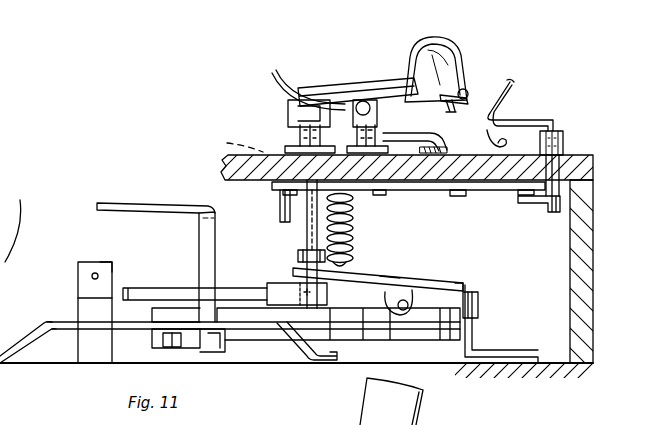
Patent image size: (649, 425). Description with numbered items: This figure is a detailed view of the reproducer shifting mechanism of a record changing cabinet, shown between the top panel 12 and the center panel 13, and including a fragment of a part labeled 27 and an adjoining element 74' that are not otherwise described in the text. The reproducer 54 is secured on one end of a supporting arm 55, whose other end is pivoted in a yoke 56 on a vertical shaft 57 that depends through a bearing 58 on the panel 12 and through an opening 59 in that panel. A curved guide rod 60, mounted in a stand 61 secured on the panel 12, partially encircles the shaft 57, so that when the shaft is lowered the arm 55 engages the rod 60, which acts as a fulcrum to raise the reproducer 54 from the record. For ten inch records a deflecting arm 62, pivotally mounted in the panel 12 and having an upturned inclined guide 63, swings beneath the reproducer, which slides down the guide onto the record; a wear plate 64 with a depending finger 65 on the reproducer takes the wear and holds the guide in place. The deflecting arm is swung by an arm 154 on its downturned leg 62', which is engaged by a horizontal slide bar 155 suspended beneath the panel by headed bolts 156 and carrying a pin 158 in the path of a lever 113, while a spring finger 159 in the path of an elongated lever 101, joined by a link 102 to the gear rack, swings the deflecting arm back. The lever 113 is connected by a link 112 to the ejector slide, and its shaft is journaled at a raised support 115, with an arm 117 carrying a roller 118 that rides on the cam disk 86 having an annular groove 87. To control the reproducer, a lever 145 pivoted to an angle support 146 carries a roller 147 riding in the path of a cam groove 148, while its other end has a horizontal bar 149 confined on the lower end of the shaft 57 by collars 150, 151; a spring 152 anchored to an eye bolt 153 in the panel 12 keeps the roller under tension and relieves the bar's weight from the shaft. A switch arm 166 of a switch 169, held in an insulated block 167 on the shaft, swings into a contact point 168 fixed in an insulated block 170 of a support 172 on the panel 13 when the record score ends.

The top panel 12 is at (225, 164).
The center panel 13 is at (560, 370).
The cover portion 27 is at (10, 219).
The reproducer 54 is at (408, 50).
The supporting arm 55 is at (380, 83).
The yoke 56 is at (290, 108).
The vertical shaft 57 is at (305, 229).
The bearing 58 is at (300, 133).
The opening 59 is at (224, 142).
The curved guide rod 60 is at (278, 72).
The stand 61 is at (350, 105).
The deflecting arm 62 is at (566, 132).
The downturned leg 62' is at (586, 175).
The upturned inclined guide 63 is at (514, 94).
The wear plate 64 is at (464, 89).
The depending finger 65 is at (470, 96).
The drum segment 74' is at (414, 401).
The cam disk 86 is at (352, 335).
The annular groove 87 is at (392, 330).
The elongated lever 101 is at (453, 112).
The link 102 is at (402, 135).
The link 112 is at (126, 204).
The lever 113 is at (200, 250).
The raised support 115 is at (55, 355).
The arm 117 is at (213, 348).
The roller 118 is at (165, 338).
The lever 145 is at (478, 300).
The angle support 146 is at (473, 337).
The roller 147 is at (463, 287).
The cam groove 148 is at (412, 292).
The horizontal bar 149 is at (392, 275).
The collar 150 is at (297, 256).
The collar 151 is at (292, 272).
The spring 152 is at (356, 222).
The eye bolt 153 is at (362, 195).
The arm 154 is at (530, 212).
The horizontal slide bar 155 is at (432, 190).
The headed bolt 156 is at (476, 196).
The pin 158 is at (279, 201).
The spring finger 159 is at (495, 140).
The switch arm 166 is at (188, 288).
The insulated block 167 is at (328, 297).
The contact point 168 is at (92, 272).
The switch 169 is at (79, 278).
The insulated block 170 is at (110, 268).
The support 172 is at (88, 310).